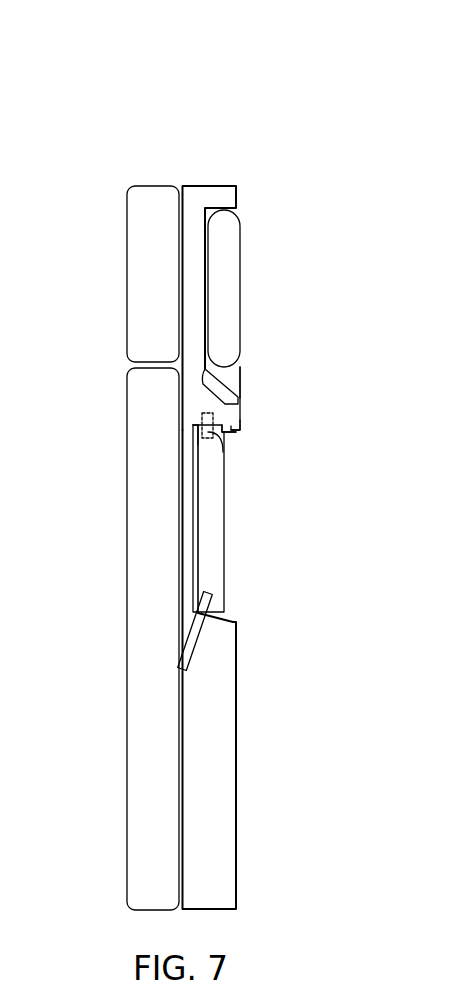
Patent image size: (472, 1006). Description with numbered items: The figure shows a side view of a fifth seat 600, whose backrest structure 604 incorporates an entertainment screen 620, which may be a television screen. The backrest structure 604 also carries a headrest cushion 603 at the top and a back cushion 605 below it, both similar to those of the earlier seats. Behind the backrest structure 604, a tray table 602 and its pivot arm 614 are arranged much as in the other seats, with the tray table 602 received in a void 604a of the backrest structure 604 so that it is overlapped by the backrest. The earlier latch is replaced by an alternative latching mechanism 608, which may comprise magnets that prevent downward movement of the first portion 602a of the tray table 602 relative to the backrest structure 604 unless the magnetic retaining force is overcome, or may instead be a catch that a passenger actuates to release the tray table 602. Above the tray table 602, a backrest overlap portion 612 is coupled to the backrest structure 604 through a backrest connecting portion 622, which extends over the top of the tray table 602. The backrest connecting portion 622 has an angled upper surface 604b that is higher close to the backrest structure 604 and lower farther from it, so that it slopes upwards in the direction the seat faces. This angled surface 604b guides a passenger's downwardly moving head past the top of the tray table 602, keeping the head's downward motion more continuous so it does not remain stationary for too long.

The fifth seat 600 is at (178, 160).
The tray table 602 is at (222, 578).
The first portion of the tray table 602a is at (232, 436).
The headrest cushion 603 is at (143, 255).
The backrest structure 604 is at (230, 197).
The void 604a is at (214, 437).
The angled upper surface 604b is at (197, 397).
The back cushion 605 is at (147, 410).
The latching mechanism 608 is at (200, 418).
The backrest overlap portion 612 is at (238, 443).
The pivot arm 614 is at (200, 635).
The entertainment screen 620 is at (238, 278).
The backrest connecting portion 622 is at (240, 388).